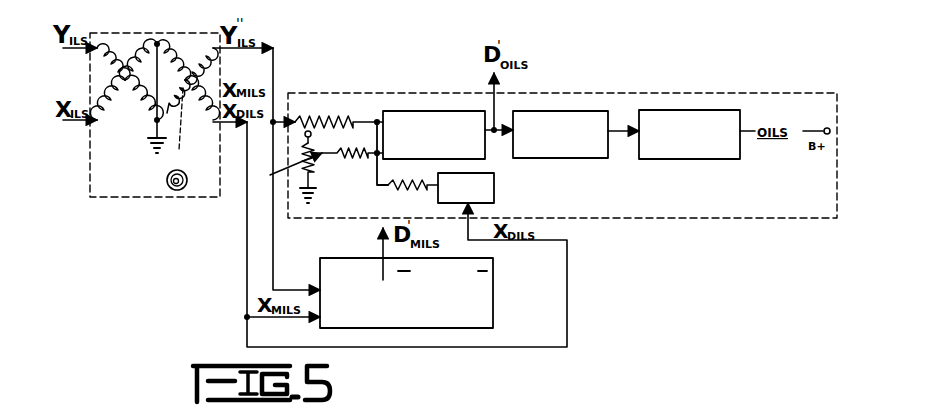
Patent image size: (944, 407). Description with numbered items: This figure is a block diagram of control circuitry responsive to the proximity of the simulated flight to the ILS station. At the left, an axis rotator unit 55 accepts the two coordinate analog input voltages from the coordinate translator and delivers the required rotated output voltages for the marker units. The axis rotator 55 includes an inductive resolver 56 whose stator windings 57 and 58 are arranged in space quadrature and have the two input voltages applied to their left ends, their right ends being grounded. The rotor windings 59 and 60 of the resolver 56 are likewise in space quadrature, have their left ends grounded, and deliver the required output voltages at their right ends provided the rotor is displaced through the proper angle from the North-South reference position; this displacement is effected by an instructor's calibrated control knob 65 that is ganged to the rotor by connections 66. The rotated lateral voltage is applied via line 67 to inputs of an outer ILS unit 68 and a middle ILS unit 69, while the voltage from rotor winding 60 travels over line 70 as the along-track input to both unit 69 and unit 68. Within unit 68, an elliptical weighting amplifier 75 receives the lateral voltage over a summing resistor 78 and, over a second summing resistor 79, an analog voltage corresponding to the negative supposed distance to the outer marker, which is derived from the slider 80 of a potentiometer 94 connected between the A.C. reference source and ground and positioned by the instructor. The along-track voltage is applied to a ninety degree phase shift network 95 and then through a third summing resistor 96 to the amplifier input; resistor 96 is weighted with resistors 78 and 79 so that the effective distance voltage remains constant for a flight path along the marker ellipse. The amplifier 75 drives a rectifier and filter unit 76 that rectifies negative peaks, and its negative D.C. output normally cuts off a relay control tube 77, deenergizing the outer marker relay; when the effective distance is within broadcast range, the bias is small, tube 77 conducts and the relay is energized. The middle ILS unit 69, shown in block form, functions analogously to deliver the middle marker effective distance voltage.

The axis rotator unit 55 is at (137, 33).
The inductive resolver 56 is at (114, 98).
The stator winding 57 is at (117, 74).
The stator winding 58 is at (128, 106).
The rotor winding 59 is at (183, 112).
The rotor winding 60 is at (181, 42).
The instructor's calibrated control knob 65 is at (186, 173).
The connections 66 is at (178, 153).
The line 67 is at (273, 70).
The outer ILS unit 68 is at (375, 97).
The middle ILS unit 69 is at (493, 290).
The line 70 is at (248, 228).
The elliptical weighting amplifier 75 is at (435, 111).
The rectifier and filter unit 76 is at (560, 111).
The relay control tube 77 is at (690, 110).
The summing resistor 78 is at (334, 100).
The second summing resistor 79 is at (350, 152).
The slider 80 is at (318, 157).
The potentiometer 94 is at (285, 170).
The 90° phase shift network 95 is at (443, 203).
The third summing resistor 96 is at (404, 183).